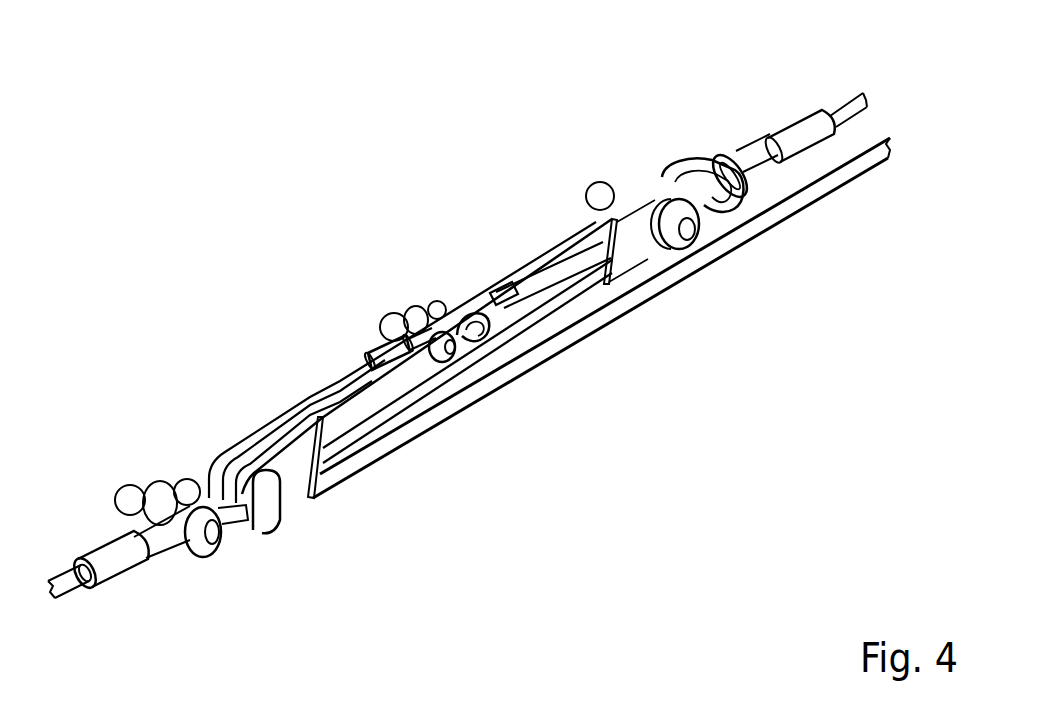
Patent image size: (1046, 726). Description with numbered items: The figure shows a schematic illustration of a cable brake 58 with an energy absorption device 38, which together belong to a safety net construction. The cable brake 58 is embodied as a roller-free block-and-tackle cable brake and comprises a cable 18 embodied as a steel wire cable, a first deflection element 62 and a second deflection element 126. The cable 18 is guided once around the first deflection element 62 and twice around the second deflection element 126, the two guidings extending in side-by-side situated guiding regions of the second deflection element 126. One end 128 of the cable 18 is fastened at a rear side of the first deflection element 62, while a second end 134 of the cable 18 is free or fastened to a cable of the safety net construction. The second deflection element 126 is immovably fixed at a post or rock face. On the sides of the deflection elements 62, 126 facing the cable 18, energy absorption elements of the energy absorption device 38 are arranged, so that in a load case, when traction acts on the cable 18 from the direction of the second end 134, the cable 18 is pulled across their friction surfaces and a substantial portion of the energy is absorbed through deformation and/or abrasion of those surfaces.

The second end 134 is at (752, 230).
The second deflection element 126 is at (297, 488).
The end 128 is at (303, 404).
The cable 18 is at (497, 286).
The cable brake 58 is at (360, 272).
The first deflection element 62 is at (630, 240).
The energy absorption device 38 is at (676, 132).